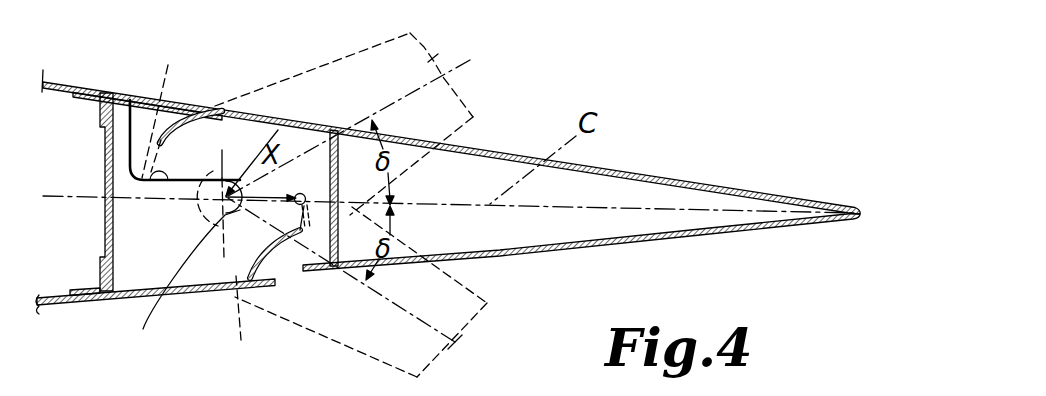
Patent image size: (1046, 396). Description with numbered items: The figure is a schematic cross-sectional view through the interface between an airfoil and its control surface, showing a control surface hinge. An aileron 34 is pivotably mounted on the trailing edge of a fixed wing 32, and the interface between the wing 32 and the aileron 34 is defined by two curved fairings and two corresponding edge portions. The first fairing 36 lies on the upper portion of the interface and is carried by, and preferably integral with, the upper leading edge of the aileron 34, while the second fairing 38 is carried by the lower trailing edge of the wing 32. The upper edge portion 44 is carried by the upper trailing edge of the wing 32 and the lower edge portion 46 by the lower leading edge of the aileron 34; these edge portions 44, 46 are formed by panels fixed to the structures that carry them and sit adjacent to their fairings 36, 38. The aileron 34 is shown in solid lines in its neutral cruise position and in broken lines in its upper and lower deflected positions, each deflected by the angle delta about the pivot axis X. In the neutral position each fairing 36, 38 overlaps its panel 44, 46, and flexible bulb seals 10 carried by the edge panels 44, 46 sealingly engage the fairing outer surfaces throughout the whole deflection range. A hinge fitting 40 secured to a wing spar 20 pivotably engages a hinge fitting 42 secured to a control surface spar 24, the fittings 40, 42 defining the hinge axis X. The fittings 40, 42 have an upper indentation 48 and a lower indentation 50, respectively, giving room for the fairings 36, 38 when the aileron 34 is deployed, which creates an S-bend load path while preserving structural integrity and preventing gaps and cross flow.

The flexible bulb seal 10 is at (216, 112).
The wing spar 20 is at (104, 141).
The control surface spar 24 is at (356, 128).
The fixed wing 32 is at (53, 302).
The aileron 34 is at (690, 182).
The first fairing 36 is at (183, 106).
The second fairing 38 is at (240, 283).
The hinge fitting 40 is at (199, 180).
The hinge fitting 42 is at (243, 214).
The upper edge portion 44 is at (188, 104).
The lower edge portion 46 is at (278, 286).
The upper indentation 48 is at (158, 181).
The lower indentation 50 is at (303, 194).